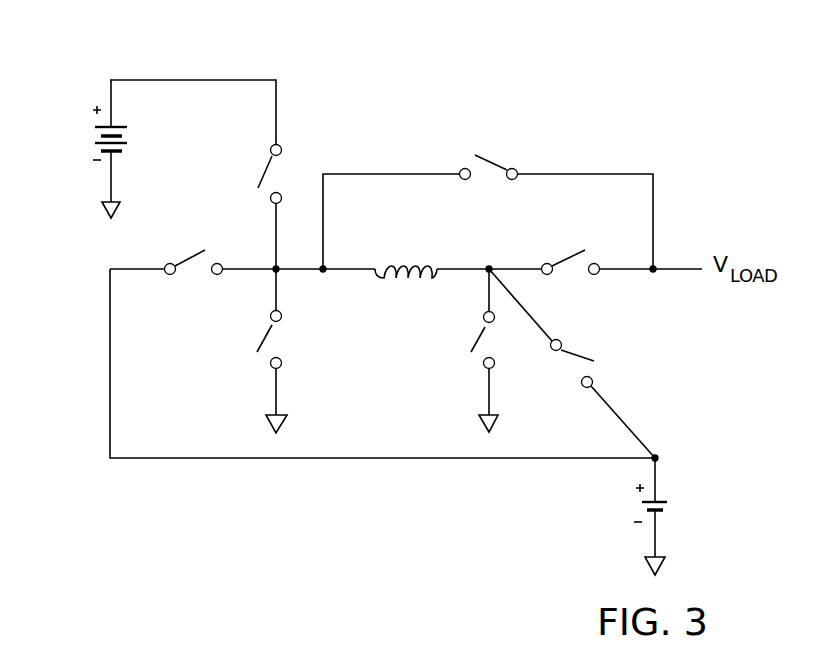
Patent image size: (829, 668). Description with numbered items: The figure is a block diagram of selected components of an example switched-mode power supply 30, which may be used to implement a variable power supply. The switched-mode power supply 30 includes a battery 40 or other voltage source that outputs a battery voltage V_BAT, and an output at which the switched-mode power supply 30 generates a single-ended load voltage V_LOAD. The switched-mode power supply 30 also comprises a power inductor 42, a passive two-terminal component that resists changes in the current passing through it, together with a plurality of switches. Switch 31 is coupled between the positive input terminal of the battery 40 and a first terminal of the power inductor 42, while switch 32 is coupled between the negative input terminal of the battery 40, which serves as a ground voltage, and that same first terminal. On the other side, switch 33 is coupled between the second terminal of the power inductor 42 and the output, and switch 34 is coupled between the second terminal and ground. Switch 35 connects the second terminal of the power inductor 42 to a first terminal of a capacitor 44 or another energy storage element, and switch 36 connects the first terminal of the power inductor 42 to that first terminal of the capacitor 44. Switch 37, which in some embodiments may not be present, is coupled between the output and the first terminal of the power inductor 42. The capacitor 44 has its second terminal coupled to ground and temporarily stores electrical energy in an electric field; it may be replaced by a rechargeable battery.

The switched-mode power supply 30 is at (595, 67).
The switch 31 is at (265, 167).
The switch 32 is at (258, 333).
The switch 33 is at (566, 255).
The switch 34 is at (471, 333).
The switch 35 is at (578, 352).
The switch 36 is at (190, 256).
The switch 37 is at (488, 160).
The battery 40 is at (92, 135).
The power inductor 42 is at (397, 262).
The capacitor 44 is at (667, 505).